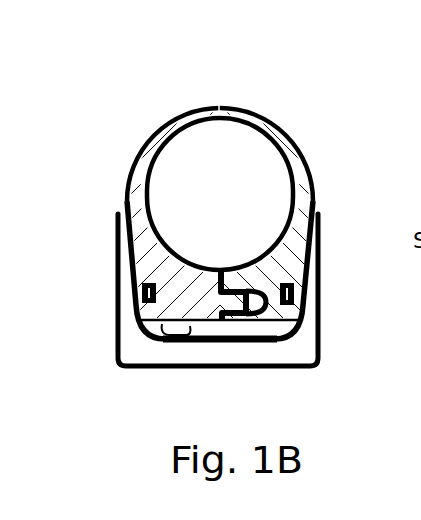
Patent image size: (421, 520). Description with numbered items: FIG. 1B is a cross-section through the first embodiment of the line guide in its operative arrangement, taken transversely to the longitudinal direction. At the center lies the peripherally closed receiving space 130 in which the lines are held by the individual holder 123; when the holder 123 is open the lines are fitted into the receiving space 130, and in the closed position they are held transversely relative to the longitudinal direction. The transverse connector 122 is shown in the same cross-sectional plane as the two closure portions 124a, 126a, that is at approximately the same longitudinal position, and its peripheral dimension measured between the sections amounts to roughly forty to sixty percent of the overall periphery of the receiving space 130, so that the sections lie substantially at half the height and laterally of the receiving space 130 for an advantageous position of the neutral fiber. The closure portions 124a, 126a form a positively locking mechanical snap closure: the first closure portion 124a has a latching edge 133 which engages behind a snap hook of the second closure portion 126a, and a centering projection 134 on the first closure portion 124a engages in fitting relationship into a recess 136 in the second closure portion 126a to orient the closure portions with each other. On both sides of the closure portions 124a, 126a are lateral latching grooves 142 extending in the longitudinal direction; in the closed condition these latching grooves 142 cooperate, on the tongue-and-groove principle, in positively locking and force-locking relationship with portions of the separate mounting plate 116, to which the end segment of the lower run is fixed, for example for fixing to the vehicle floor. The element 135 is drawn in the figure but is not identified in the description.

The mounting plate 116 is at (298, 343).
The transverse connector 122 is at (243, 116).
The holder 123 is at (166, 107).
The first closure portion 124a is at (131, 332).
The second closure portion 126a is at (307, 316).
The receiving space 130 is at (239, 206).
The latching edge 133 is at (143, 320).
The centering projection 134 is at (231, 290).
The ribs 135 is at (188, 340).
The recess 136 is at (265, 306).
The lateral latching grooves 142 is at (150, 287).